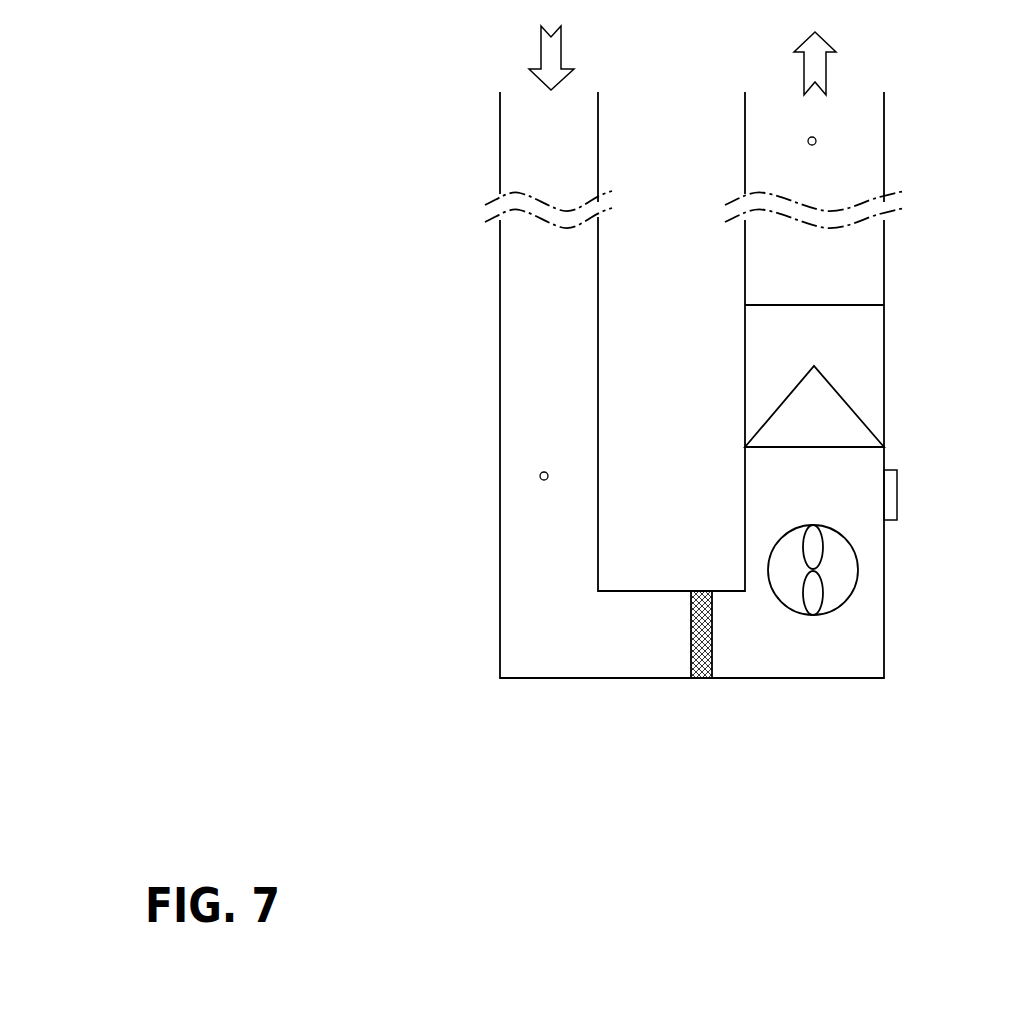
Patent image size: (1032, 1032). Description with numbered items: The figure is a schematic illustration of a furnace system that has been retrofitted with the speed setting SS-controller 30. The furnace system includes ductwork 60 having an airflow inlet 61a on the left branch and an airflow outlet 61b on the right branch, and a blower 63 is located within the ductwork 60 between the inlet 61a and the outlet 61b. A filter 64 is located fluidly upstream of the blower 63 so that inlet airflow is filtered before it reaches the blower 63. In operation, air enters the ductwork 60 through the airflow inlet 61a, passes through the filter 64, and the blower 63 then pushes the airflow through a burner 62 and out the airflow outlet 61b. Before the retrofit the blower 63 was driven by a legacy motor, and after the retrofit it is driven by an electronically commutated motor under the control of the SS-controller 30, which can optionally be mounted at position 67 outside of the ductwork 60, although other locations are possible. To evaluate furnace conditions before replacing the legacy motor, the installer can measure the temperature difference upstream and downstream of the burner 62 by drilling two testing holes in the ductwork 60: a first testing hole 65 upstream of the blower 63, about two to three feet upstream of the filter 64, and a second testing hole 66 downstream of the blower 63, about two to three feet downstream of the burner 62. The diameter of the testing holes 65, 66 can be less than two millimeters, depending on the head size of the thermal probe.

The SS-controller 30 is at (898, 504).
The ductwork 60 is at (500, 337).
The airflow inlet 61a is at (500, 127).
The airflow outlet 61b is at (884, 128).
The burner 62 is at (849, 398).
The blower 63 is at (855, 592).
The filter 64 is at (691, 642).
The first testing hole 65 is at (540, 477).
The second testing hole 66 is at (815, 144).
The position 67 is at (897, 492).